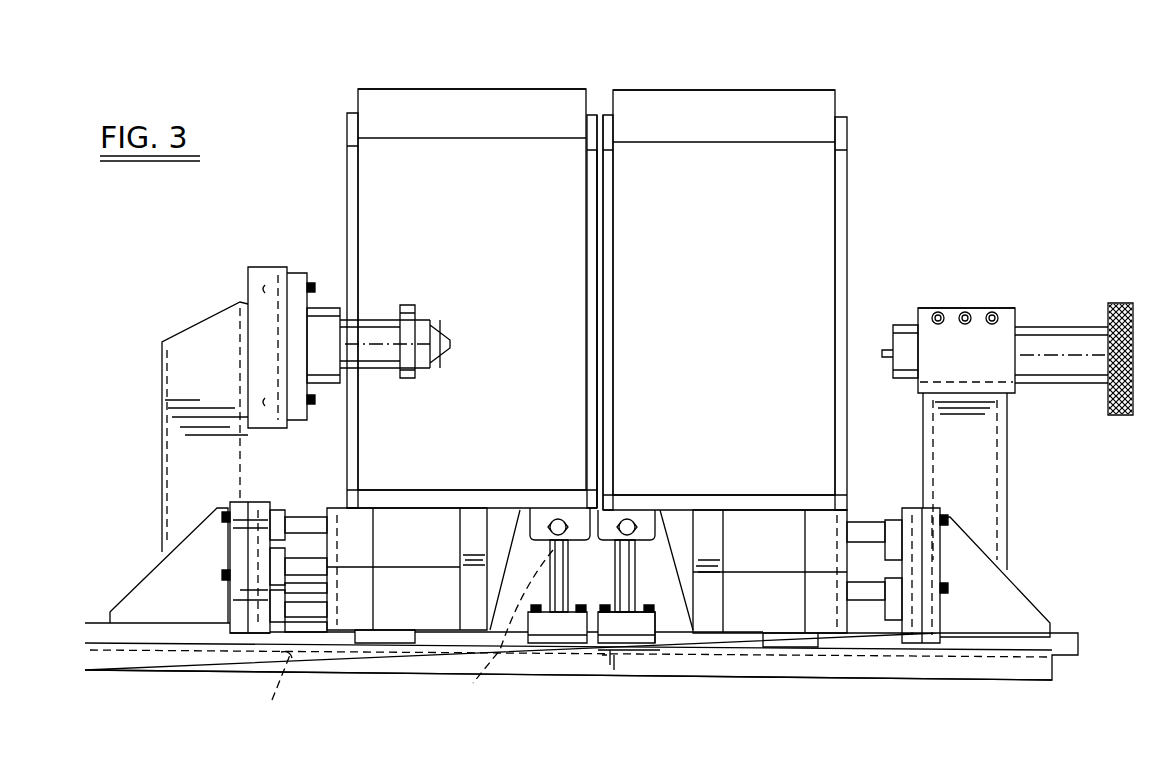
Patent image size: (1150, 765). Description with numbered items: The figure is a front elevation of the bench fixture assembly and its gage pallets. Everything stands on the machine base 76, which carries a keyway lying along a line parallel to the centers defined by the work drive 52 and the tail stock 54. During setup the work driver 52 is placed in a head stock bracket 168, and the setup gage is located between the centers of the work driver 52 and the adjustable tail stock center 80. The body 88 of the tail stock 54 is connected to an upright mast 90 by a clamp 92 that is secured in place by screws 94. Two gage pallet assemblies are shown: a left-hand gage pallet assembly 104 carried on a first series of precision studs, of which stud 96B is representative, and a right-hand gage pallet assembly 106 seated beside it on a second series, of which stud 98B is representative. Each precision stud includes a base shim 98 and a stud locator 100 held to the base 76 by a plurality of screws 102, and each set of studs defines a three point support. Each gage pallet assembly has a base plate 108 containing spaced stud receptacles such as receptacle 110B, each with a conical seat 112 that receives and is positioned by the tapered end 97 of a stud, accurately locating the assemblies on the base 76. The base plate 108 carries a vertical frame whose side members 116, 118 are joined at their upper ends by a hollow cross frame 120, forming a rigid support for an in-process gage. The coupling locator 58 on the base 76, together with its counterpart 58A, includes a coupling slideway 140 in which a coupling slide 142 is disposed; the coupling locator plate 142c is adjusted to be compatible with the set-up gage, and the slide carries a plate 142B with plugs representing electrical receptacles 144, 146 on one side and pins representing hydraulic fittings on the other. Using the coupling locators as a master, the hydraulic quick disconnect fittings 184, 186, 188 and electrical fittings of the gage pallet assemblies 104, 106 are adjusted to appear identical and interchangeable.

The hollow cross frame 120 is at (489, 90).
The side member 116 is at (352, 148).
The left-hand gage pallet assembly 104 is at (347, 180).
The right-hand gage pallet assembly 106 is at (850, 206).
The side member 118 is at (597, 215).
The head stock bracket 168 is at (212, 305).
The work drive 52 is at (345, 310).
The screws 94 is at (938, 311).
The tail stock 54 is at (978, 308).
The adjustable center 80 is at (883, 355).
The clamp 92 is at (995, 335).
The body 88 is at (1060, 328).
The upright mast 90 is at (1005, 448).
The hydraulic quick disconnect fitting 184 is at (300, 520).
The clamp plate 142B is at (255, 505).
The electrical receptacle plug 144 is at (278, 500).
The coupling locator 58 is at (160, 562).
The base plate 108 is at (450, 497).
The stud receptacle 110B is at (547, 505).
The tapered end 97 is at (580, 477).
The conical seat 112 is at (665, 520).
The hydraulic quick disconnect fitting 186 is at (327, 560).
The electrical receptacle plug 146 is at (280, 590).
The precision stud 98B is at (625, 572).
The coupling locator plate 142c is at (222, 582).
The wedge support 58A is at (1028, 592).
The coupling slide 142 is at (142, 637).
The coupling slideway 140 is at (270, 688).
The hydraulic quick disconnect fitting 188 is at (310, 610).
The precision stud 96B is at (537, 603).
The screws 102 is at (543, 612).
The base shim 98 is at (575, 650).
The base 76 is at (658, 668).
The stud locator 100 is at (645, 628).